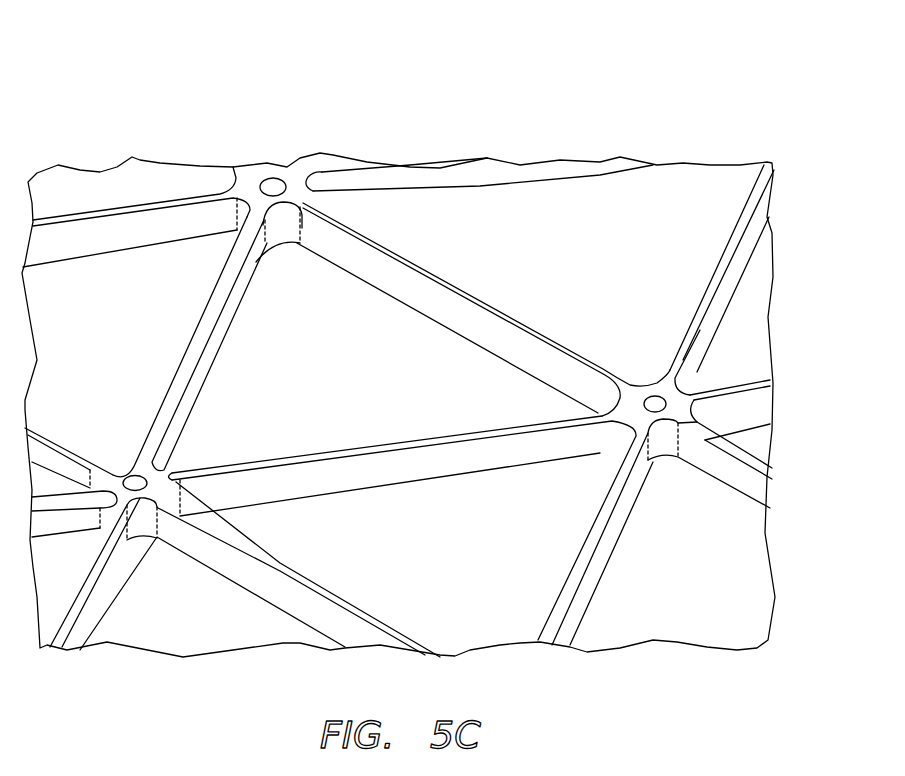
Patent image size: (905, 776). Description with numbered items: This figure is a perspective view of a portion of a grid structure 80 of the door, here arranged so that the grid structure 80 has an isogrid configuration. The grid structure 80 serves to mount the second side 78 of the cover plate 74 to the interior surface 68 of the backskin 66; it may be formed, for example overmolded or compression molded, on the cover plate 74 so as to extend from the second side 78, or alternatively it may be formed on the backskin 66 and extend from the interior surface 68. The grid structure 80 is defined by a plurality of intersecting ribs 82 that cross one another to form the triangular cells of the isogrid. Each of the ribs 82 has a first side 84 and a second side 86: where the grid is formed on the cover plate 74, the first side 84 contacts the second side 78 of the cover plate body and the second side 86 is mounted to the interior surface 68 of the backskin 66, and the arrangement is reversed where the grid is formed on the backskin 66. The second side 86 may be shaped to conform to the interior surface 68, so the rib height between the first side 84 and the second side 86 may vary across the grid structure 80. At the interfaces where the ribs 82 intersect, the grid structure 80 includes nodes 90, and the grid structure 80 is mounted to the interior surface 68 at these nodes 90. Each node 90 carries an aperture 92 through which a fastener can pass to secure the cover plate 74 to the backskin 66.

The backskin 66 is at (398, 341).
The cover plate 74 is at (587, 112).
The interior surface 68 is at (761, 280).
The second side 78 is at (732, 360).
The ribs 82 is at (253, 262).
The first side 84 is at (487, 350).
The second side 86 is at (458, 290).
The nodes 90 is at (150, 553).
The apertures 92 is at (135, 483).
The grid structure 80 is at (603, 606).